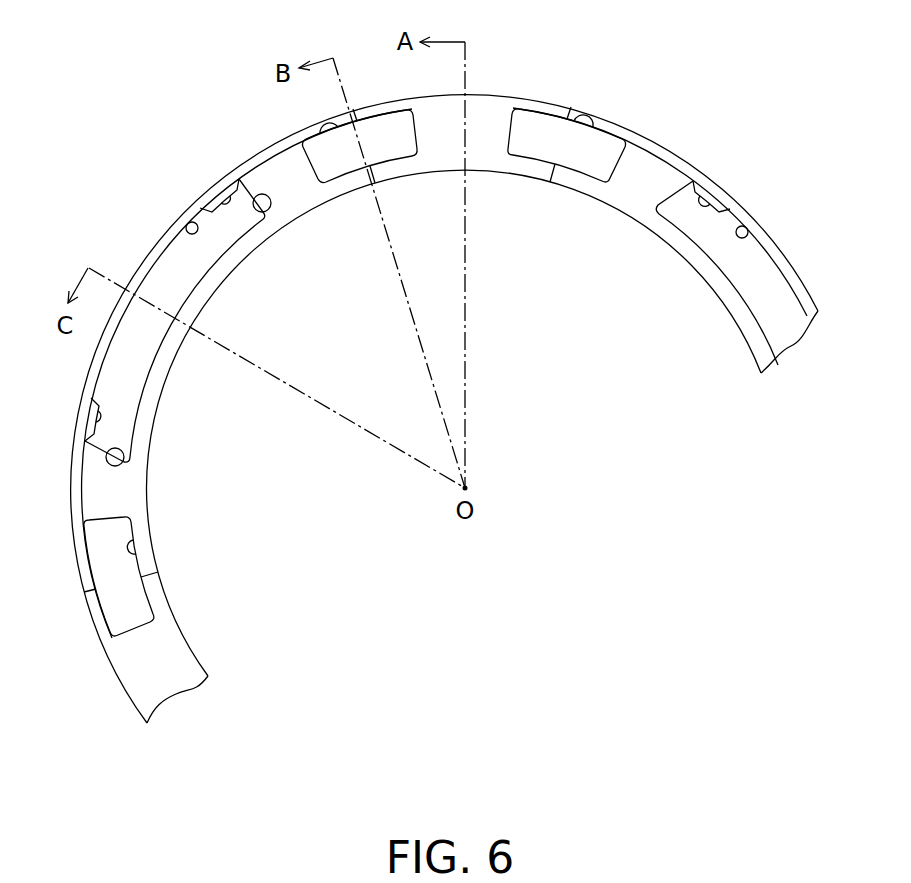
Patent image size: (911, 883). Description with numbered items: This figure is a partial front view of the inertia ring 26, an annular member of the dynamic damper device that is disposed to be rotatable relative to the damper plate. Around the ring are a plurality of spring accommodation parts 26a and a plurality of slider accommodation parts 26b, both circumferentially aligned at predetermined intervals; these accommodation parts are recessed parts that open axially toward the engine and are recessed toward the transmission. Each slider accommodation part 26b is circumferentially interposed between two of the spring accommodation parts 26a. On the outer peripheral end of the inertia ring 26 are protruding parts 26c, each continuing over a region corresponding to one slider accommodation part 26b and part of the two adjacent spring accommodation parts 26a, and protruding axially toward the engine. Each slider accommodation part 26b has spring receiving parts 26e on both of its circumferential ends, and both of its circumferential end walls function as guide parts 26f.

The inertia ring 26 is at (677, 151).
The spring accommodation part 26a is at (322, 131).
The slider accommodation part 26b is at (190, 222).
The protruding part 26c is at (143, 266).
The spring receiving part 26e is at (224, 194).
The guide part 26f is at (268, 212).